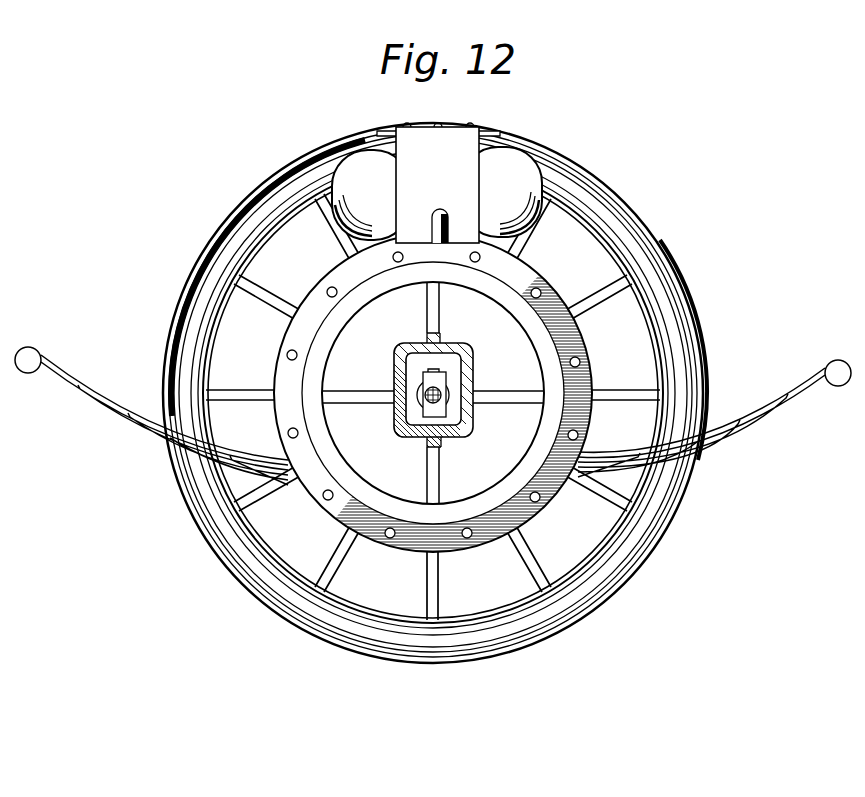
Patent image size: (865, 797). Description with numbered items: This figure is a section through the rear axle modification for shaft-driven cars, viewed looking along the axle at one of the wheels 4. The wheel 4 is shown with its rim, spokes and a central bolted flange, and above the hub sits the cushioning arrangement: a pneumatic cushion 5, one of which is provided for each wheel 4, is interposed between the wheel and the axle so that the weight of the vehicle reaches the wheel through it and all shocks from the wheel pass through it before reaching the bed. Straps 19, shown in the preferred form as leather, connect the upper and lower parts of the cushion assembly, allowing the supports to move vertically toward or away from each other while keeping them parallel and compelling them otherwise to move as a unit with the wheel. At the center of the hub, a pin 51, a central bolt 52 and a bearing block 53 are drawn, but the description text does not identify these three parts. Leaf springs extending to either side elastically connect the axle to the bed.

The wheel 4 is at (690, 301).
The pneumatic cushion 5 is at (525, 180).
The straps 19 is at (468, 169).
The pin 51 is at (438, 220).
The axle bolt 52 is at (441, 391).
The bearing block 53 is at (438, 421).